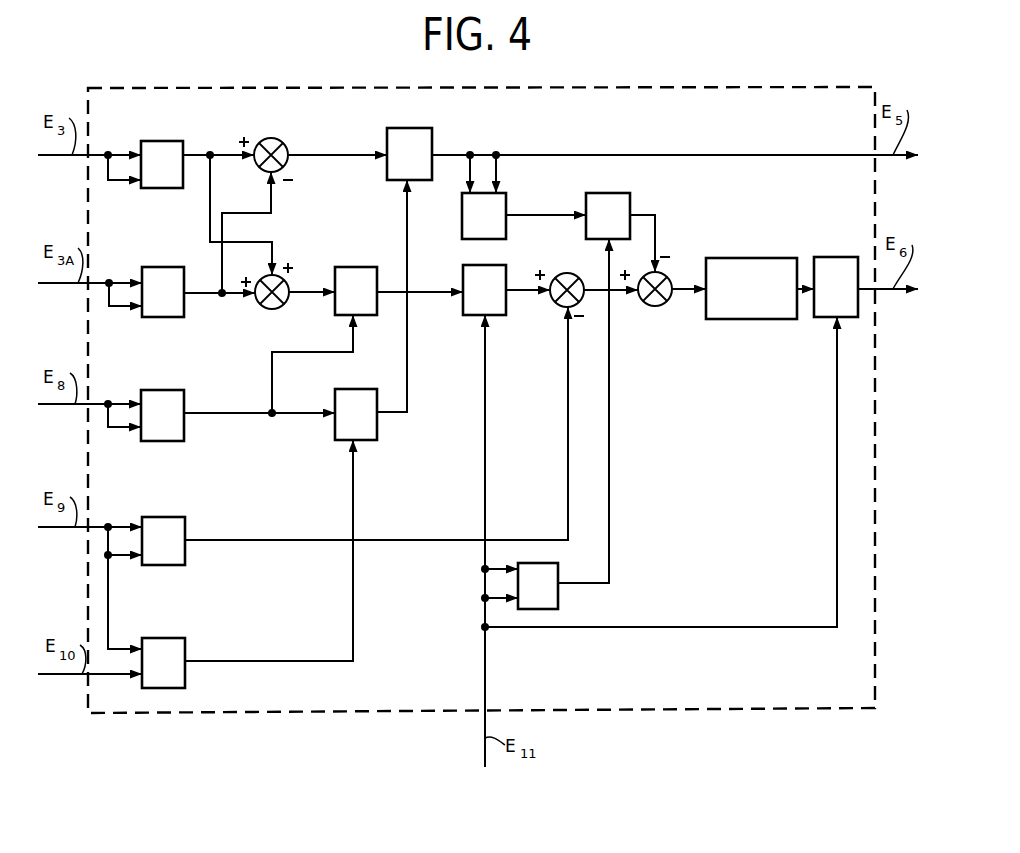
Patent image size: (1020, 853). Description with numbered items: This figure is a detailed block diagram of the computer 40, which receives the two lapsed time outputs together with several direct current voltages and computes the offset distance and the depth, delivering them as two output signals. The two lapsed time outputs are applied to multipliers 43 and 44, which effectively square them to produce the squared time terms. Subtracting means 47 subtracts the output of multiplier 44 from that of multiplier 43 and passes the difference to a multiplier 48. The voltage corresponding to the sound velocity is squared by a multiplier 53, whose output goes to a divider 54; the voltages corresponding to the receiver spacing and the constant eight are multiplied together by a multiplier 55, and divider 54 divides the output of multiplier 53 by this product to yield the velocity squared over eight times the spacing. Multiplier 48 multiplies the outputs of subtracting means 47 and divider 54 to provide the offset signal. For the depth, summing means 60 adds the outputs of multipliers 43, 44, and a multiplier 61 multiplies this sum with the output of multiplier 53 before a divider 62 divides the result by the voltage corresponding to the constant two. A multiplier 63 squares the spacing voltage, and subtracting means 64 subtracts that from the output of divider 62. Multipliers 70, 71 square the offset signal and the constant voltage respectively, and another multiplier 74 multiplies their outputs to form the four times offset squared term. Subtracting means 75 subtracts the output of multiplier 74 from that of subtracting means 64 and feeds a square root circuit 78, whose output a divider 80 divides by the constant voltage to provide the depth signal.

The computer 40 is at (481, 400).
The multiplier 43 is at (176, 141).
The multiplier 44 is at (176, 267).
The subtracting means 47 is at (261, 139).
The multiplier 48 is at (400, 128).
The multiplier 53 is at (172, 390).
The divider 54 is at (345, 389).
The multiplier 55 is at (176, 638).
The summing means 60 is at (275, 309).
The multiplier 61 is at (343, 267).
The divider 62 is at (470, 315).
The multiplier 63 is at (176, 517).
The subtracting means 64 is at (570, 272).
The multiplier 70 is at (462, 200).
The multiplier 71 is at (558, 600).
The multiplier 74 is at (628, 193).
The subtracting means 75 is at (655, 307).
The square root circuit 78 is at (755, 258).
The divider 80 is at (845, 257).